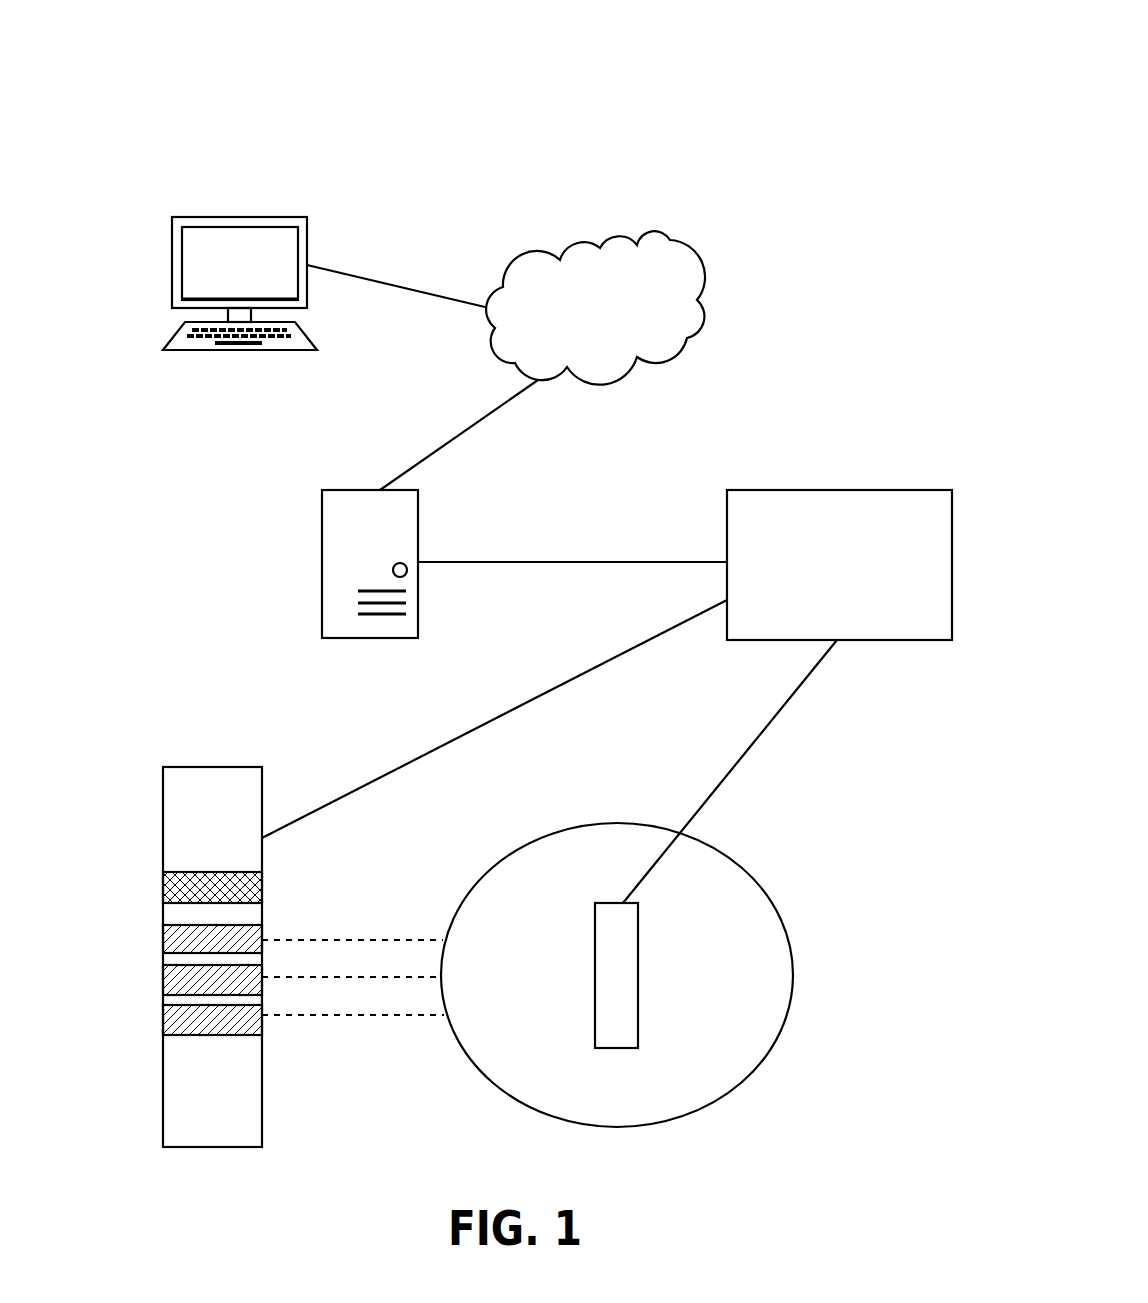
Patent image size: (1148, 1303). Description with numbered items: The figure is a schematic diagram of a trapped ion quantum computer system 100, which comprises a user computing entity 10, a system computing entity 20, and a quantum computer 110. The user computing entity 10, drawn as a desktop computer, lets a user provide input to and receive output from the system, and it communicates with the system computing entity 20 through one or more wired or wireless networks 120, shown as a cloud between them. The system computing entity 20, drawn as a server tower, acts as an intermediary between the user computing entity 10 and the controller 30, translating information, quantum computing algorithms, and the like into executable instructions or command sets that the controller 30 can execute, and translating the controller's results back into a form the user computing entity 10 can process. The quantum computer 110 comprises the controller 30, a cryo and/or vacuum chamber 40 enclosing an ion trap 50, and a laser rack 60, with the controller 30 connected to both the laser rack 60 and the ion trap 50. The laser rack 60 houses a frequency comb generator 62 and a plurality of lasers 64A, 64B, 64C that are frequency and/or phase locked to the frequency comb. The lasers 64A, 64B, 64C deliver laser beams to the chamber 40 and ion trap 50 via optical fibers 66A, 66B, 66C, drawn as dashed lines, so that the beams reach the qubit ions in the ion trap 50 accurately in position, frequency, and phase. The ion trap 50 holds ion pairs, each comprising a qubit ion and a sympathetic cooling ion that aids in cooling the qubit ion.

The trapped ion quantum computer system 100 is at (893, 72).
The quantum computer 110 is at (901, 383).
The user computing entity 10 is at (254, 239).
The wired or wireless network 120 is at (637, 289).
The system computing entity 20 is at (390, 514).
The controller 30 is at (839, 565).
The laser rack 60 is at (245, 907).
The frequency comb generator 62 is at (272, 881).
The laser 64A is at (153, 928).
The laser 64B is at (153, 968).
The laser 64C is at (153, 1007).
The optical fiber 66A is at (352, 922).
The optical fiber 66B is at (352, 959).
The optical fiber 66C is at (353, 997).
The cryo and/or vacuum chamber 40 is at (666, 973).
The ion trap 50 is at (670, 971).